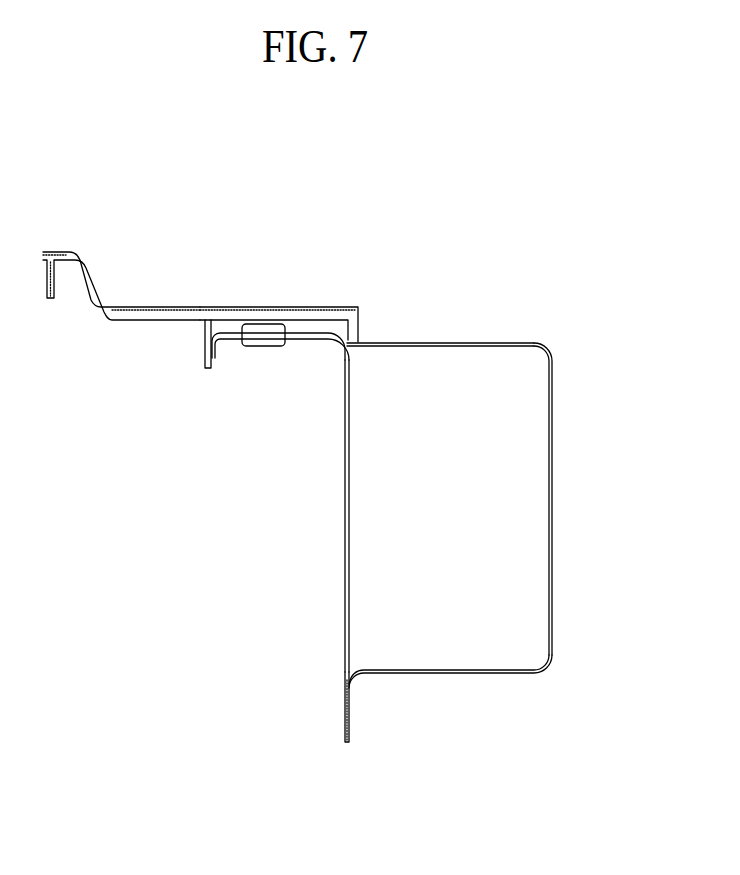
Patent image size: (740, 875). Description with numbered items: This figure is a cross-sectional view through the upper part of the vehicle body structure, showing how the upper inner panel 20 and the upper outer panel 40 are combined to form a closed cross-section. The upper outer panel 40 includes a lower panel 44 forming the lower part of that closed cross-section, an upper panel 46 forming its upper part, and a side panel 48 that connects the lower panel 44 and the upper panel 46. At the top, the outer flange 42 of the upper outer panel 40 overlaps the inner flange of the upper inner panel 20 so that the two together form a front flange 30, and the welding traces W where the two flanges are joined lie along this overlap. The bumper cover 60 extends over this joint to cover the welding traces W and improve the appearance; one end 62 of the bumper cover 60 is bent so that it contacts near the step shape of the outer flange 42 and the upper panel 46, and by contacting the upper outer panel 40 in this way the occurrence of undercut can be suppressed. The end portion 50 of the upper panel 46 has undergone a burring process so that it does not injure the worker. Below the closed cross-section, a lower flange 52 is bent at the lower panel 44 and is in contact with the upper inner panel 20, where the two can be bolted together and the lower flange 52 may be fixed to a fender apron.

The upper inner panel 20 is at (344, 605).
The front flange 30 is at (290, 350).
The upper outer panel 40 is at (500, 506).
The outer flange 42 is at (302, 332).
The lower panel 44 is at (484, 678).
The upper panel 46 is at (473, 343).
The side panel 48 is at (553, 552).
The end portion 50 is at (212, 355).
The lower flange 52 is at (350, 718).
The bumper cover 60 is at (125, 321).
The end of bumper cover 62 is at (360, 332).
The welding traces W is at (262, 347).